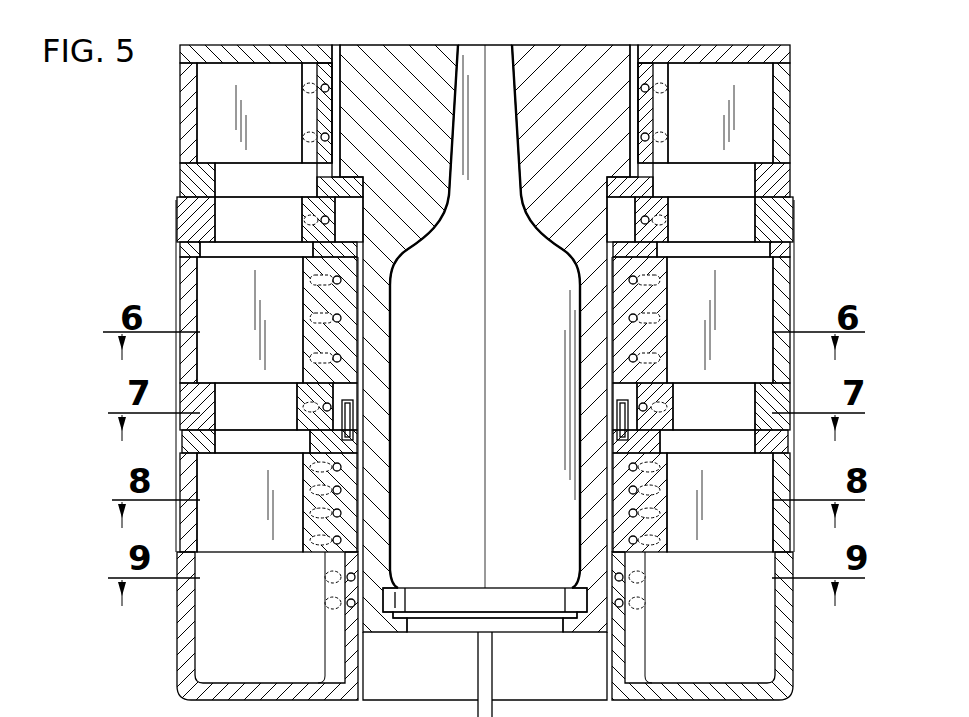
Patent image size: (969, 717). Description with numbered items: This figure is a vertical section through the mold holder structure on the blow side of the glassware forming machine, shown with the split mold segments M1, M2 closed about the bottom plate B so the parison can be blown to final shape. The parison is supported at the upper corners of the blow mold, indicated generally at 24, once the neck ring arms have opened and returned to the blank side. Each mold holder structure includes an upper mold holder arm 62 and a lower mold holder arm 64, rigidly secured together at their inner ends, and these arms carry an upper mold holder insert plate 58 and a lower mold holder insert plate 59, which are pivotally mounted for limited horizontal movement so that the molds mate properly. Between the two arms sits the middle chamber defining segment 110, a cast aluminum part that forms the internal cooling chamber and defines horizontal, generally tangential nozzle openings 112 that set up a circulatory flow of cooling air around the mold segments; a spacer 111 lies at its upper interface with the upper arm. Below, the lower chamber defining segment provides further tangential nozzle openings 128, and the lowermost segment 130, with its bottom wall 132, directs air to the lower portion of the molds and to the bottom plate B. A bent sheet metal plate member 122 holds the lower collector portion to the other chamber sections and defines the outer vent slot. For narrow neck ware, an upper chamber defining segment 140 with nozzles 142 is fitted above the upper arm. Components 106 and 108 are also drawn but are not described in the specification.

The upper corners of the blow mold 24 is at (502, 50).
The split mold segment M1 is at (405, 53).
The split mold segment M2 is at (557, 60).
The nozzles 142 is at (343, 172).
The upper chamber defining segment 140 is at (180, 126).
The bearing 108 is at (330, 138).
The upper mold holder insert plate 58 is at (181, 181).
The upper mold holder arm 62 is at (186, 212).
The middle chamber defining segment 110 is at (199, 333).
The spacer 111 is at (398, 256).
The nozzle openings 112 is at (393, 318).
The lower mold holder arm 64 is at (362, 392).
The locking pin 106 is at (353, 409).
The lower mold holder insert plate 59 is at (345, 448).
The nozzle openings 128 is at (341, 540).
The bottom plate B is at (448, 588).
The lowermost segment 130 is at (178, 654).
The bottom wall 132 is at (303, 683).
The bent sheet metal plate member 122 is at (793, 618).